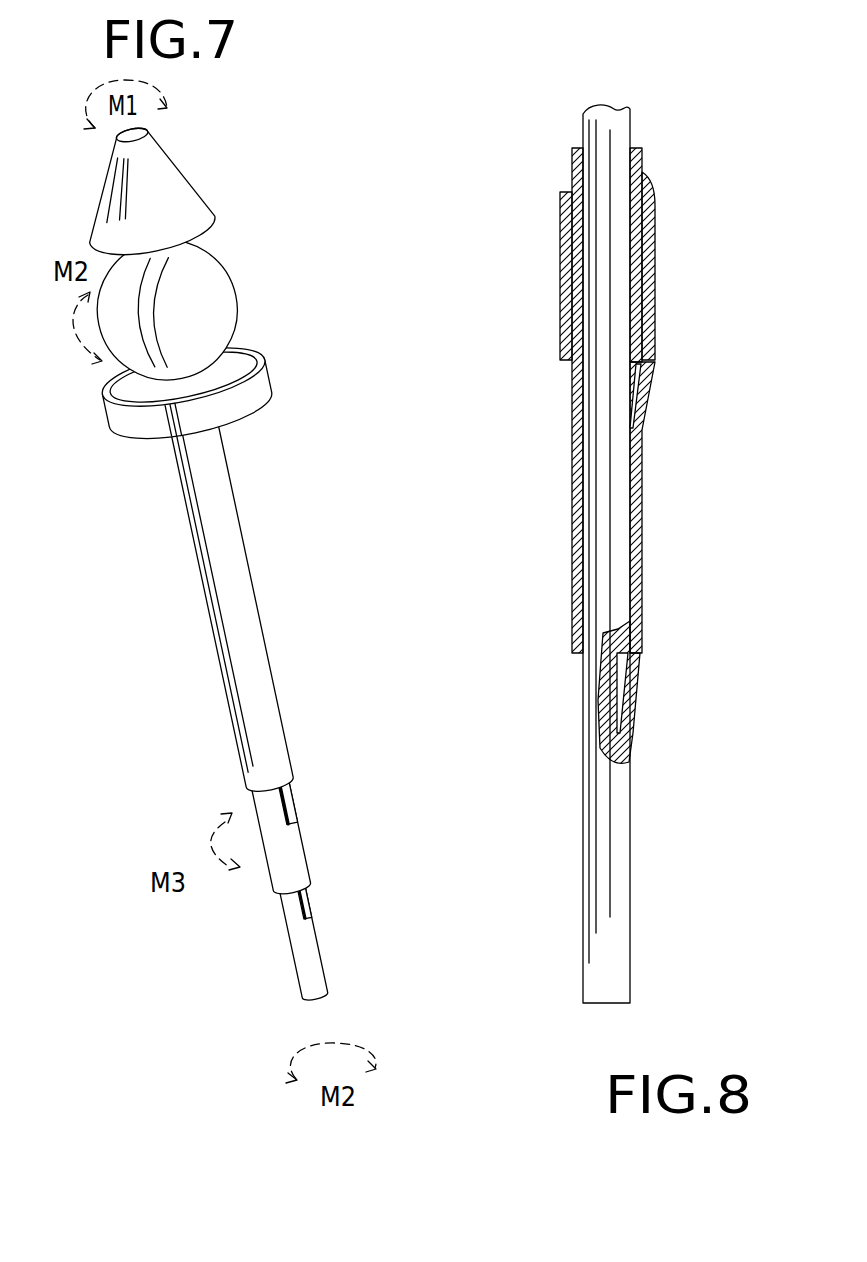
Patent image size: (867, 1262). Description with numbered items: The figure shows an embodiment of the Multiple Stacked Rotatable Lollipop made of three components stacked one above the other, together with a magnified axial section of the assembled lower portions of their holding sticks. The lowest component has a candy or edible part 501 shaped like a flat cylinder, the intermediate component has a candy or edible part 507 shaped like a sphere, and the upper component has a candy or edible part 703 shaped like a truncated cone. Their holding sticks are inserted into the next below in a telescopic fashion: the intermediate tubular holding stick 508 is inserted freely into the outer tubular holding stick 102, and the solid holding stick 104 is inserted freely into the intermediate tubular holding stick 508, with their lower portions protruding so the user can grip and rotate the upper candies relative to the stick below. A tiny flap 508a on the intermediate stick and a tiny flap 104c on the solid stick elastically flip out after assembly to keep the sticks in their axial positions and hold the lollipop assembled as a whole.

In FIG. 7, the outer tubular holding stick 102 is at (253, 557).
In FIG. 8, the outer tubular holding stick 102 is at (650, 320).
In FIG. 7, the solid holding stick 104 is at (293, 968).
In FIG. 8, the solid holding stick 104 is at (635, 837).
In FIG. 7, the tiny flap 104c is at (313, 905).
In FIG. 8, the tiny flap 104c is at (640, 682).
In FIG. 7, the candy or edible part 501 is at (263, 378).
In FIG. 7, the candy or edible part 507 is at (242, 284).
In FIG. 7, the intermediate tubular holding stick 508 is at (308, 850).
In FIG. 8, the intermediate tubular holding stick 508 is at (640, 482).
In FIG. 7, the tiny flap 508a is at (300, 788).
In FIG. 8, the tiny flap 508a is at (642, 402).
In FIG. 7, the candy or edible part 703 is at (187, 170).